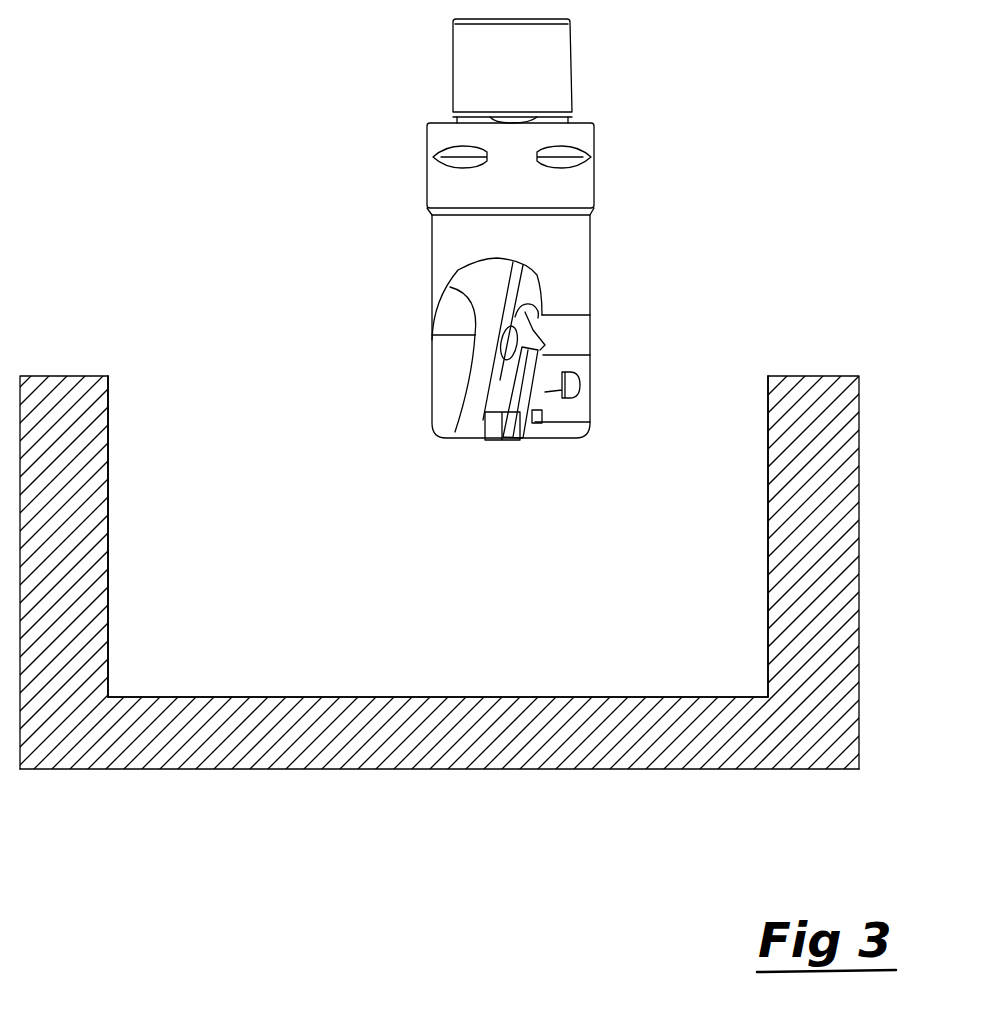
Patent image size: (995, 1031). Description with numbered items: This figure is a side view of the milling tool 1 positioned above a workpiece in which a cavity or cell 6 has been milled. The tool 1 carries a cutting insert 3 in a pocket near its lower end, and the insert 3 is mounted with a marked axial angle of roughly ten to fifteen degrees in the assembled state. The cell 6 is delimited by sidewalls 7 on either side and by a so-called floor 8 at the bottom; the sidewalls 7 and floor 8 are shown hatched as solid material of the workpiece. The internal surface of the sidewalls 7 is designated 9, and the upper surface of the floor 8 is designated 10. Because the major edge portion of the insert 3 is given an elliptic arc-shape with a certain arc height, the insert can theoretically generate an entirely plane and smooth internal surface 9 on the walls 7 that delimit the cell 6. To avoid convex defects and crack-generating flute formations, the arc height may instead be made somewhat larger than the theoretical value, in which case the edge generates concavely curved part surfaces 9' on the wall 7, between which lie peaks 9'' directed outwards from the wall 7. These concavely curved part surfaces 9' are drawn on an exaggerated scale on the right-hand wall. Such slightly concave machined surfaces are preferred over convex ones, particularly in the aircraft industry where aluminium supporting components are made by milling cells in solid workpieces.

The milling tool 1 is at (594, 252).
The cutting insert 3 is at (535, 416).
The cavity or cell 6 is at (505, 628).
The sidewall 7 is at (62, 588).
The floor 8 is at (327, 757).
The internal surface 9 is at (497, 572).
The concavely curved part surface 9' is at (743, 536).
The peak 9'' is at (497, 572).
The upper surface 10 is at (350, 697).